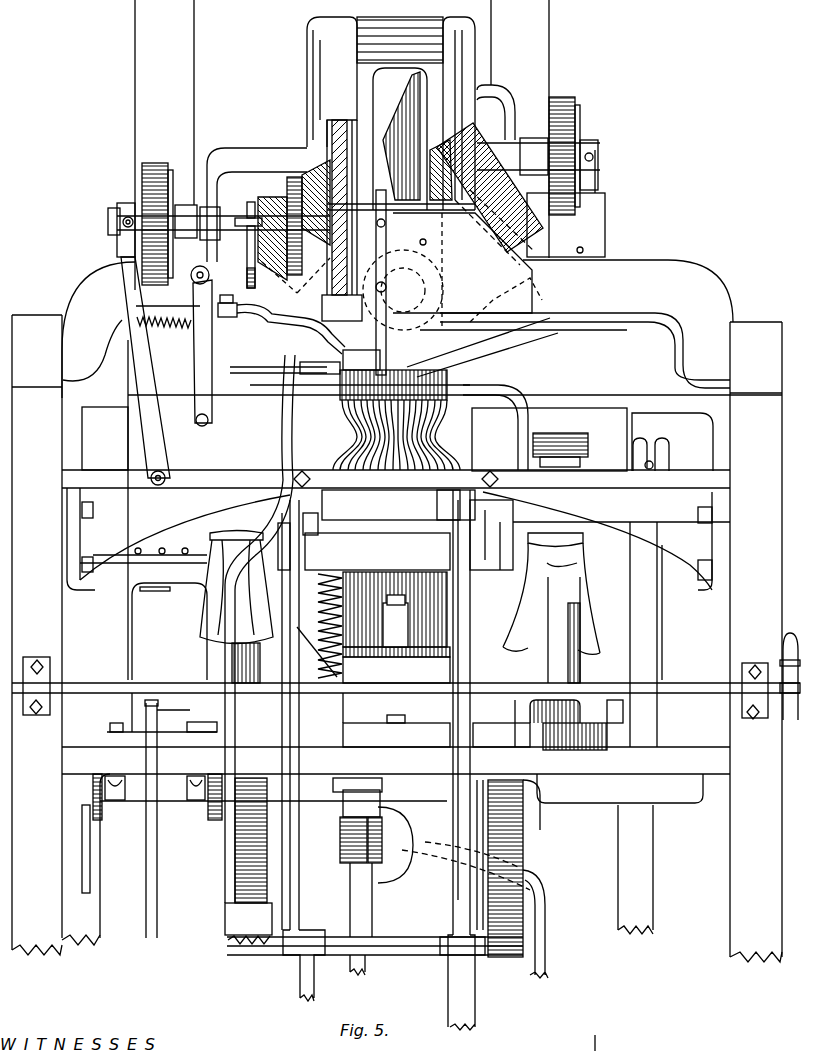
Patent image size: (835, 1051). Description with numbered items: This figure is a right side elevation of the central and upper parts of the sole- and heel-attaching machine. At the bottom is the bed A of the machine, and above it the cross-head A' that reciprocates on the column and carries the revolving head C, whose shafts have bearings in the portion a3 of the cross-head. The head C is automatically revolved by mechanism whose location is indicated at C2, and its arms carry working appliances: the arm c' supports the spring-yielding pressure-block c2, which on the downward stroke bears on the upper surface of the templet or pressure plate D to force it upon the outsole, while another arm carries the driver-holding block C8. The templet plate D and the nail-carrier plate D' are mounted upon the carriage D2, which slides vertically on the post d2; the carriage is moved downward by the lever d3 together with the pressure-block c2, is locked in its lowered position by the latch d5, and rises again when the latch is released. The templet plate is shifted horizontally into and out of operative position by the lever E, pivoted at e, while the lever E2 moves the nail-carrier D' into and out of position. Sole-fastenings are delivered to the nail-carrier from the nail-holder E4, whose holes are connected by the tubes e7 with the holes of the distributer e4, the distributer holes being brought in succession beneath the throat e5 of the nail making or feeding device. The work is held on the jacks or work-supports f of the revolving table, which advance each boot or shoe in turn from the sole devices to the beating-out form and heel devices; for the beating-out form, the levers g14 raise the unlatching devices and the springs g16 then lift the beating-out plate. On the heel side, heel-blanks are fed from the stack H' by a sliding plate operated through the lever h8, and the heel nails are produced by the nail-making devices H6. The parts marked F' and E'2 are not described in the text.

The cross-head A' is at (332, 156).
The stack of heel-blocks H' is at (427, 113).
The nail-making devices H6 is at (496, 112).
The location of the head-revolving mechanism C2 is at (442, 186).
The driver-holding block C8 is at (490, 194).
The bearing portion of the cross-head a3 is at (393, 282).
The revolving head C is at (460, 295).
The arm of the revolving head c' is at (291, 333).
The pressure-block c2 is at (278, 379).
The distributer e4 is at (470, 380).
The throat of the nail making or feeding device e5 is at (262, 629).
The tubes e7 is at (488, 427).
The nail-holder E4 is at (396, 429).
The nail-carrier plate D' is at (389, 539).
The templet or pressure plate D is at (306, 541).
The carriage D2 is at (377, 551).
The lever E is at (245, 462).
The springs g16 is at (317, 639).
The lever E2 is at (471, 712).
The post d2 is at (430, 648).
The latch d5 is at (384, 628).
The jacks or work-supports f is at (416, 608).
The gear F' is at (548, 725).
The bed of the machine A is at (401, 788).
The levers g14 is at (454, 848).
The lever h8 is at (635, 869).
The pivot of lever E e is at (228, 938).
The rod foot E'2 is at (475, 982).
The lever d3 is at (788, 682).